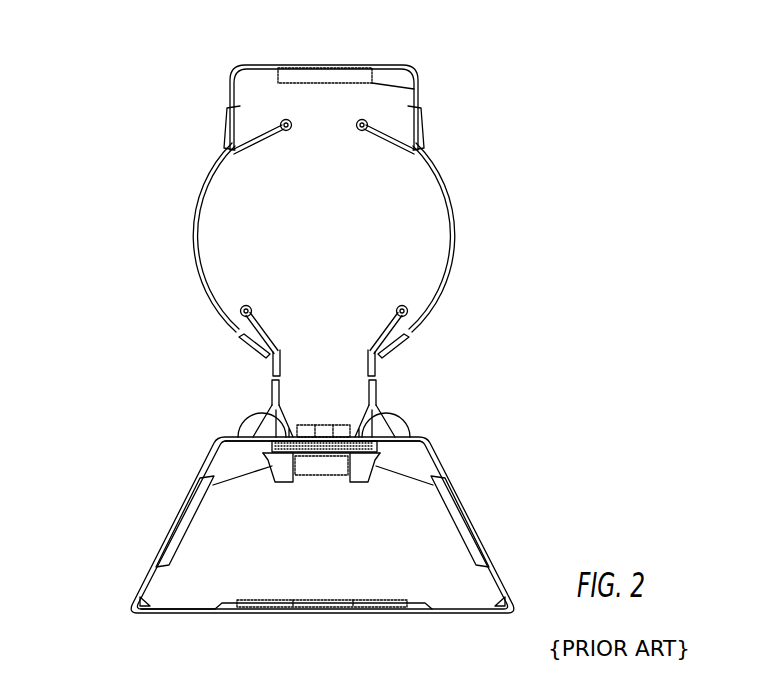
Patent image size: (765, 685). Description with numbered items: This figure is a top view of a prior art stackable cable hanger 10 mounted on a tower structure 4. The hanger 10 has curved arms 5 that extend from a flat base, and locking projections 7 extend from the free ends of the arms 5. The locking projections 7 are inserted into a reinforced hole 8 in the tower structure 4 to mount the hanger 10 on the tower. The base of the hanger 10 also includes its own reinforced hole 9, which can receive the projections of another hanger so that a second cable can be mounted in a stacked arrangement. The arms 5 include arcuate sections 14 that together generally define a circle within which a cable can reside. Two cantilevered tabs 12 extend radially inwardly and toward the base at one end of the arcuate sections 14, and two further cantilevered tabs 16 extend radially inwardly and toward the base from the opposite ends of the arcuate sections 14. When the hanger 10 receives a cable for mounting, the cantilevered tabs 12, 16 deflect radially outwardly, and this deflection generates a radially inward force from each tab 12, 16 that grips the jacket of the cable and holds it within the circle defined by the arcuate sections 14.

The tower structure 4 is at (465, 615).
The curved arms 5 is at (485, 183).
The locking projections 7 is at (210, 482).
The reinforced hole 8 is at (350, 450).
The reinforced hole 9 is at (297, 81).
The cable hanger 10 is at (538, 257).
The cantilevered tabs 12 is at (362, 133).
The arcuate sections 14 is at (195, 257).
The cantilevered tabs 16 is at (380, 323).